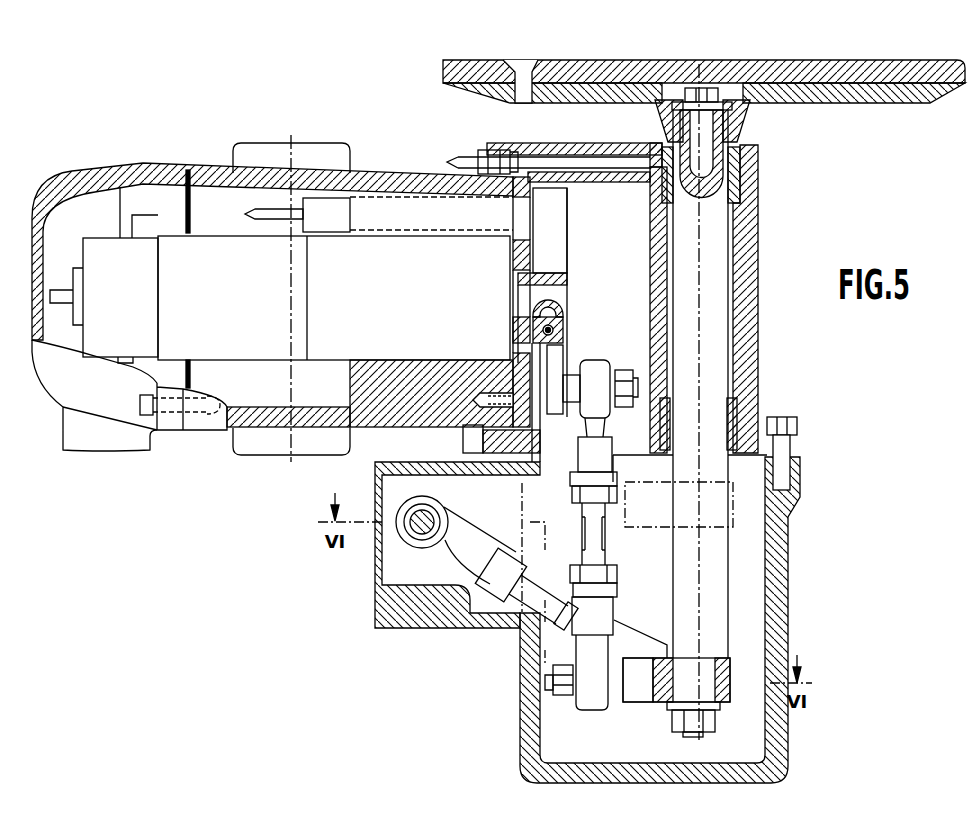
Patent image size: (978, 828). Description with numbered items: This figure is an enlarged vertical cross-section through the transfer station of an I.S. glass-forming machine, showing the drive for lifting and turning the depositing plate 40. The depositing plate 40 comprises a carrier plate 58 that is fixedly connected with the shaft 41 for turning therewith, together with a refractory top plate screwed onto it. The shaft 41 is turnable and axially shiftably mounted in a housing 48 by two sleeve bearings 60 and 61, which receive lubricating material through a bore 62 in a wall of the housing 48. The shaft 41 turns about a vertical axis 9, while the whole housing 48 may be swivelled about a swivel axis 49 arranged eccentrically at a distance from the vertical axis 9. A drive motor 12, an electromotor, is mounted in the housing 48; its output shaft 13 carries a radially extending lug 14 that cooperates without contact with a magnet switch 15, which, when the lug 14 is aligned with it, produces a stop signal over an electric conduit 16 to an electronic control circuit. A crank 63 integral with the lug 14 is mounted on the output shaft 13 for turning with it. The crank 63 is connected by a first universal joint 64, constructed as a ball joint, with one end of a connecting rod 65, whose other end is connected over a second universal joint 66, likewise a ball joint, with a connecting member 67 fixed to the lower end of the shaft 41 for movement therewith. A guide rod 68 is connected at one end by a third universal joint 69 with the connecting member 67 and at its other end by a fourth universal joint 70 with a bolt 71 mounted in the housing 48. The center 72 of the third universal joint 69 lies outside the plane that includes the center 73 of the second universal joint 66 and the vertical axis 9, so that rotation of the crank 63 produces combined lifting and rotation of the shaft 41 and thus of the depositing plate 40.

The vertical axis 9 is at (744, 350).
The drive motor 12 is at (326, 362).
The output shaft 13 is at (566, 290).
The lug 14 is at (568, 207).
The magnet switch 15 is at (390, 200).
The electric conduit 16 is at (262, 210).
The depositing plate 40 is at (436, 72).
The shaft 41 is at (733, 277).
The housing 48 is at (417, 170).
The swivel axis 49 is at (290, 285).
The carrier plate 58 is at (812, 102).
The sleeve bearing 60 is at (738, 188).
The sleeve bearing 61 is at (737, 408).
The bore 62 is at (603, 165).
The crank 63 is at (557, 415).
The first universal joint 64 is at (610, 366).
The connecting rod 65 is at (603, 538).
The second universal joint 66 is at (598, 705).
The connecting member 67 is at (730, 530).
The guide rod 68 is at (549, 592).
The third universal joint 69 is at (667, 647).
The fourth universal joint 70 is at (420, 540).
The bolt 71 is at (421, 514).
The center of the third universal joint 72 is at (718, 505).
The center of the second universal joint 73 is at (590, 682).